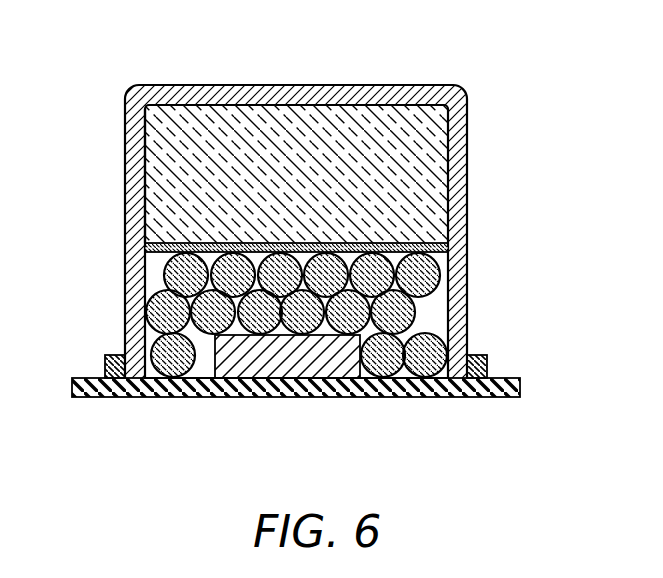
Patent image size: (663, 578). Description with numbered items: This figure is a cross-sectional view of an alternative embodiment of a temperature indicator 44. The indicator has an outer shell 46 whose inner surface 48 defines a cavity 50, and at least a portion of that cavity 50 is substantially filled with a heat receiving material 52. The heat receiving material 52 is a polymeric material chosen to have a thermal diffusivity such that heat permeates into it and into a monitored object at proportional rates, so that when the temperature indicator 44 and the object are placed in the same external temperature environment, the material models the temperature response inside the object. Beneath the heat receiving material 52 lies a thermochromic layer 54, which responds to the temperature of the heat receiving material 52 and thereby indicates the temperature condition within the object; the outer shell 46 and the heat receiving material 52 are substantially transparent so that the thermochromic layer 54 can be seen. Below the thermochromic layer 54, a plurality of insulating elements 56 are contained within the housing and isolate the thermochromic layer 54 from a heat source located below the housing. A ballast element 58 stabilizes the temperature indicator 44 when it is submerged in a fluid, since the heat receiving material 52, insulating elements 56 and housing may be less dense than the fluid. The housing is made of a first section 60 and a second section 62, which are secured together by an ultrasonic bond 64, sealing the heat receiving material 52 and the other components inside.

The temperature indicator 44 is at (321, 231).
The outer shell 46 is at (348, 231).
The inner surface 48 is at (296, 127).
The cavity 50 is at (147, 207).
The heat receiving material 52 is at (349, 174).
The thermochromic layer 54 is at (344, 226).
The insulating elements 56 is at (404, 391).
The ballast element 58 is at (287, 392).
The first section 60 is at (345, 312).
The second section 62 is at (310, 415).
The ultrasonic bond 64 is at (325, 345).